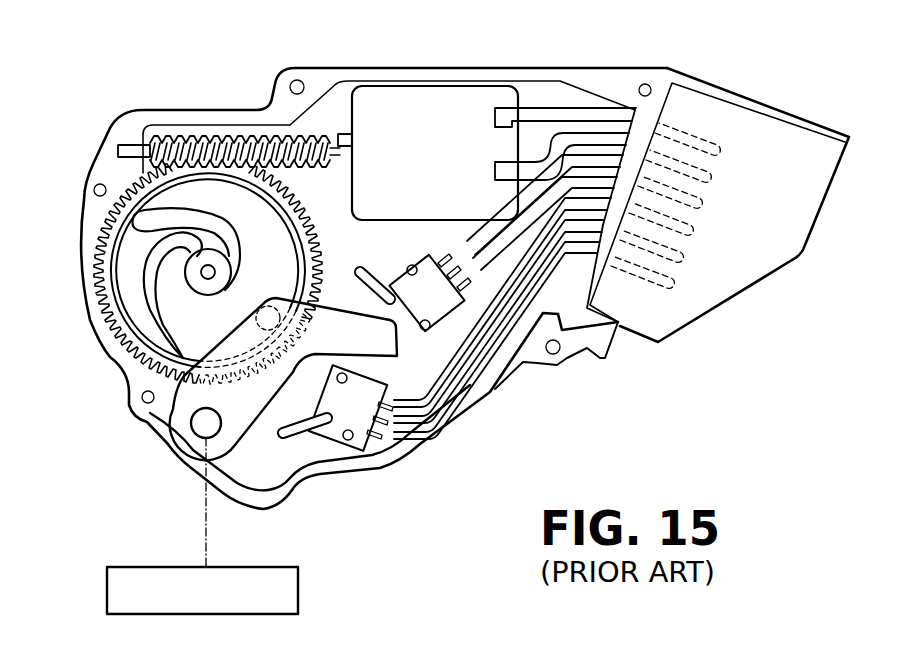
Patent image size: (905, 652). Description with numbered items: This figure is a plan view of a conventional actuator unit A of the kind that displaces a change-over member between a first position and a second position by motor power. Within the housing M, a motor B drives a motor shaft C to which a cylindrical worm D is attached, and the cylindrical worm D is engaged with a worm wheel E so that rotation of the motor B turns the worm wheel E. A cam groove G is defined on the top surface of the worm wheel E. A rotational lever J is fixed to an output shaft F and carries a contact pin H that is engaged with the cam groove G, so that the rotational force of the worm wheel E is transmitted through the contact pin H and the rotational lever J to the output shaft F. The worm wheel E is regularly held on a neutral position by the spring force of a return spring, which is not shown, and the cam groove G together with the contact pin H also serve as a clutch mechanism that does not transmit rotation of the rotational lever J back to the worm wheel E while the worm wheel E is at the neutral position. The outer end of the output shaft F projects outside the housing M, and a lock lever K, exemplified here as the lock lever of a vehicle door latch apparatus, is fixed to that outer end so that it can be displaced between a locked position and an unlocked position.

The actuator unit A is at (612, 403).
The motor B is at (383, 117).
The motor shaft C is at (124, 146).
The cylindrical worm D is at (208, 137).
The worm wheel E is at (103, 252).
The output shaft F is at (203, 421).
The cam groove G is at (187, 300).
The contact pin H is at (288, 308).
The rotational lever J is at (263, 390).
The lock lever K is at (298, 580).
The housing M is at (487, 390).